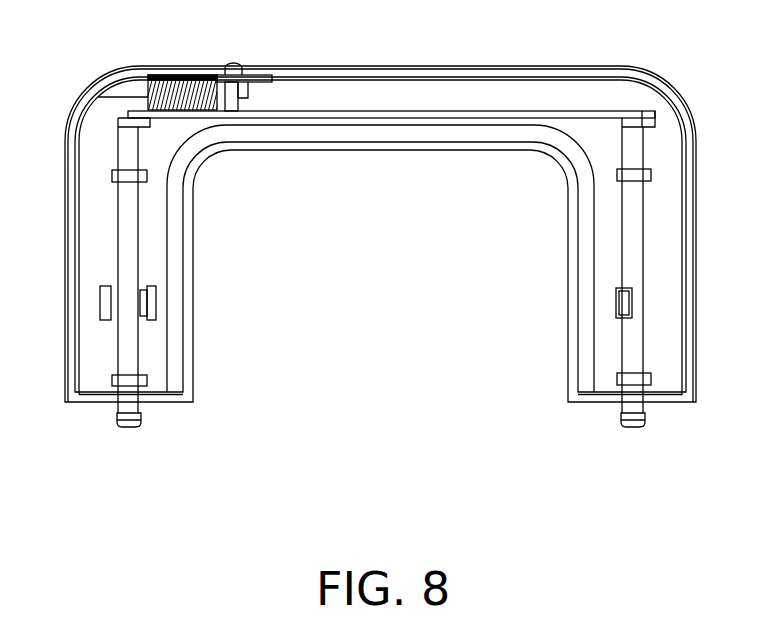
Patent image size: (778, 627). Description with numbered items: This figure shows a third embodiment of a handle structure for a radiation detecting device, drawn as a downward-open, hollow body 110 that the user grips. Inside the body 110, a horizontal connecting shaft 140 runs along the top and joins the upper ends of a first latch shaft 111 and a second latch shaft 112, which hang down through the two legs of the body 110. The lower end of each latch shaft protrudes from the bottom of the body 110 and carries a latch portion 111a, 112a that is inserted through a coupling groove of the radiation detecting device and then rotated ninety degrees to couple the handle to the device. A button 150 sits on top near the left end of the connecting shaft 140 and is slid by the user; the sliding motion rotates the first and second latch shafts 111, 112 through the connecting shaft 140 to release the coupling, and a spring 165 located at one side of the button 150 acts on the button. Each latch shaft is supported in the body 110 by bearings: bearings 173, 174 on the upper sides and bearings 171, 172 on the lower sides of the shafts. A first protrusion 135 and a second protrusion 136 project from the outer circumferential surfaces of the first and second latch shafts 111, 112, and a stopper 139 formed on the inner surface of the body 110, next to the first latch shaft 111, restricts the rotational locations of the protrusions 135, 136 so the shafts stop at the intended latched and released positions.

The body 110 is at (563, 68).
The connecting shaft 140 is at (407, 118).
The spring 165 is at (173, 78).
The button 150 is at (232, 63).
The first latch shaft 111 is at (125, 350).
The latch portion 111a is at (128, 427).
The second latch shaft 112 is at (641, 336).
The latch portion 112a is at (634, 427).
The first protrusion 135 is at (156, 302).
The second protrusion 136 is at (616, 300).
The stopper 139 is at (100, 303).
The bearing 171 is at (112, 378).
The bearing 172 is at (652, 380).
The bearing 173 is at (112, 178).
The bearing 174 is at (652, 176).